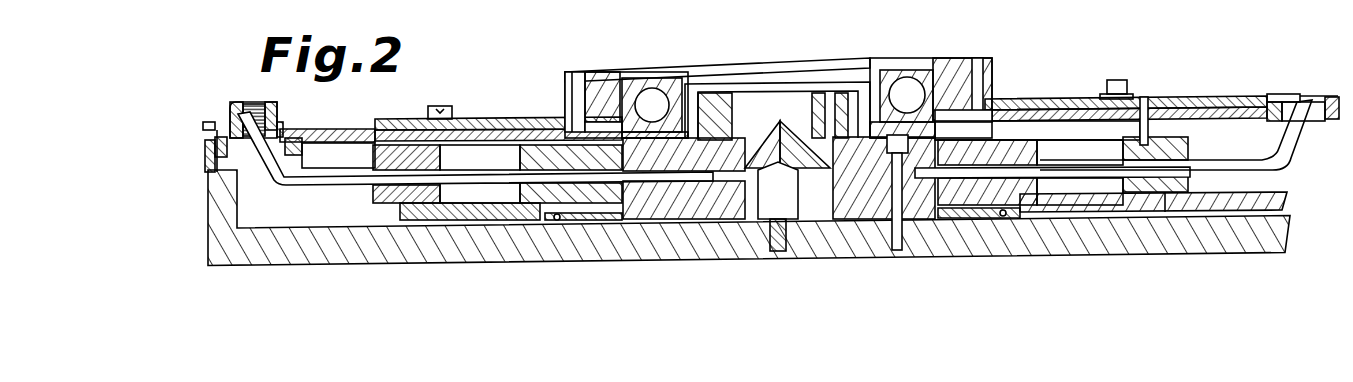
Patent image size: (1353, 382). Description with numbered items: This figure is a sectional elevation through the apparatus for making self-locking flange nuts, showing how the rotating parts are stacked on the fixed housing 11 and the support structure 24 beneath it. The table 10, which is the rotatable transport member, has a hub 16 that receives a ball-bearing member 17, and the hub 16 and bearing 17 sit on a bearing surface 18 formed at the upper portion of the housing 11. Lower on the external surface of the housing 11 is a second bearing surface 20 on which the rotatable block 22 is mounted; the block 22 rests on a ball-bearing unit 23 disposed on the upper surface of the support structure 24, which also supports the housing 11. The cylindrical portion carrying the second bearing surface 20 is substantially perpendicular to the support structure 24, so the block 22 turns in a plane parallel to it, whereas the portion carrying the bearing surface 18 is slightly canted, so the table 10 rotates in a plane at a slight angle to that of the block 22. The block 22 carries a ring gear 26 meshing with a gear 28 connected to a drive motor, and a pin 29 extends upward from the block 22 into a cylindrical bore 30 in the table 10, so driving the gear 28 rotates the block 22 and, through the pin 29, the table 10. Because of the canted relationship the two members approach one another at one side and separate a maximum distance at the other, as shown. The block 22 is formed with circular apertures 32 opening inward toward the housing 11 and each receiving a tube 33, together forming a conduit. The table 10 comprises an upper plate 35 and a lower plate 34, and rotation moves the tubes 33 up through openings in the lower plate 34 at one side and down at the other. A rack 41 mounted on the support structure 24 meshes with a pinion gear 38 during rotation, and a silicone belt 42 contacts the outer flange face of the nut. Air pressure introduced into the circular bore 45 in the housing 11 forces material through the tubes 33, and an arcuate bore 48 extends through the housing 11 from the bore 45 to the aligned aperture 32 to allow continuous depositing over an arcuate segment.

The table 10 is at (320, 127).
The housing 11 is at (700, 138).
The hub 16 is at (943, 60).
The ball-bearing member 17 is at (883, 73).
The bearing surface 18 is at (672, 84).
The second bearing surface 20 is at (955, 145).
The rotatable block 22 is at (1170, 137).
The ball-bearing unit 23 is at (947, 222).
The support structure 24 is at (1290, 219).
The ring gear 26 is at (1097, 222).
The gear 28 is at (1285, 193).
The pin 29 is at (1128, 127).
The cylindrical bore 30 is at (1143, 97).
The aperture 32 is at (420, 175).
The tube 33 is at (1222, 175).
The lower plate 34 is at (356, 133).
The upper plate 35 is at (322, 176).
The pinion gear 38 is at (282, 160).
The rack 41 is at (193, 104).
The silicone belt 42 is at (218, 123).
The circular bore 45 is at (790, 205).
The arcuate bore 48 is at (715, 177).